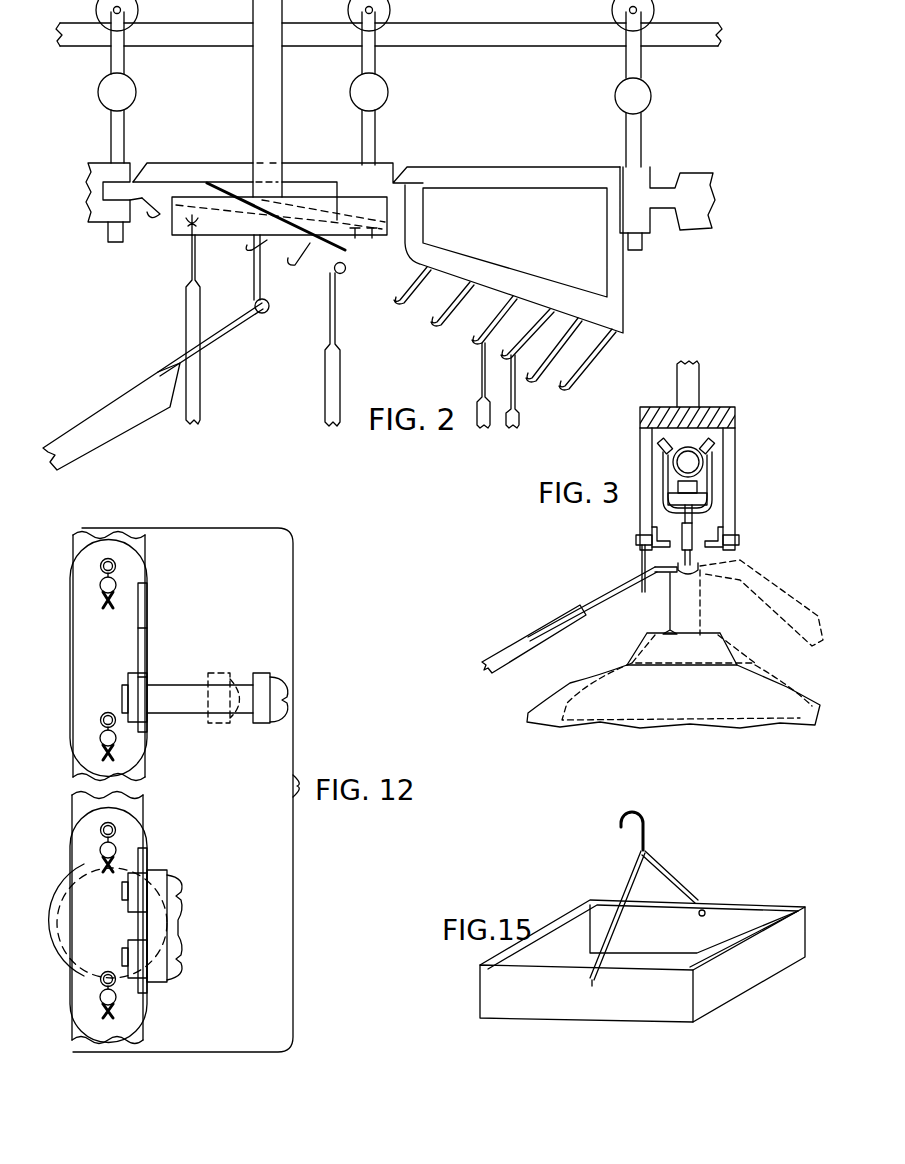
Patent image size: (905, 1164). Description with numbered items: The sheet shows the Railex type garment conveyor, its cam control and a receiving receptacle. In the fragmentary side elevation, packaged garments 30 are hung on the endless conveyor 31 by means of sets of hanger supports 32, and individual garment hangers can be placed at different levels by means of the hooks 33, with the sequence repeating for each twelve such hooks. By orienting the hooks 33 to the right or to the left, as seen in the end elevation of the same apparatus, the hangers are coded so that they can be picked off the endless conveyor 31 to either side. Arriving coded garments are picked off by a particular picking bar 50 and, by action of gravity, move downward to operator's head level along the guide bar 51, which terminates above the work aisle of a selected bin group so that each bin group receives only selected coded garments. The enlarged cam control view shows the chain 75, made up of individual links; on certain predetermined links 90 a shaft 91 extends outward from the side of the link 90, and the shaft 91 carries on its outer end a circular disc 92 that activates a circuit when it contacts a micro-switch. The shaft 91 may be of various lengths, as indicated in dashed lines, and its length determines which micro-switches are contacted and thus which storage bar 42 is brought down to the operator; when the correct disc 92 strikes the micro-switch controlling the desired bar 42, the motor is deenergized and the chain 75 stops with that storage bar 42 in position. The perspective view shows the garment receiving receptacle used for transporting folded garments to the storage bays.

In FIG. 2, the packaged garments 30 is at (338, 380).
In FIG. 3, the packaged garments 30 is at (527, 709).
In FIG. 2, the endless conveyor 31 is at (660, 80).
In FIG. 3, the endless conveyor 31 is at (708, 523).
In FIG. 3, the hanger supports 32 is at (676, 553).
In FIG. 2, the hooks 33 is at (341, 274).
In FIG. 3, the hooks 33 is at (702, 566).
In FIG. 12, the storage bar 42 is at (52, 942).
In FIG. 2, the picking bar 50 is at (237, 322).
In FIG. 3, the picking bar 50 is at (603, 598).
In FIG. 2, the guide bar 51 is at (118, 403).
In FIG. 3, the guide bar 51 is at (512, 652).
In FIG. 12, the chain 75 is at (66, 812).
In FIG. 12, the link 90 is at (80, 737).
In FIG. 12, the shaft 91 is at (173, 703).
In FIG. 12, the disc 92 is at (218, 671).